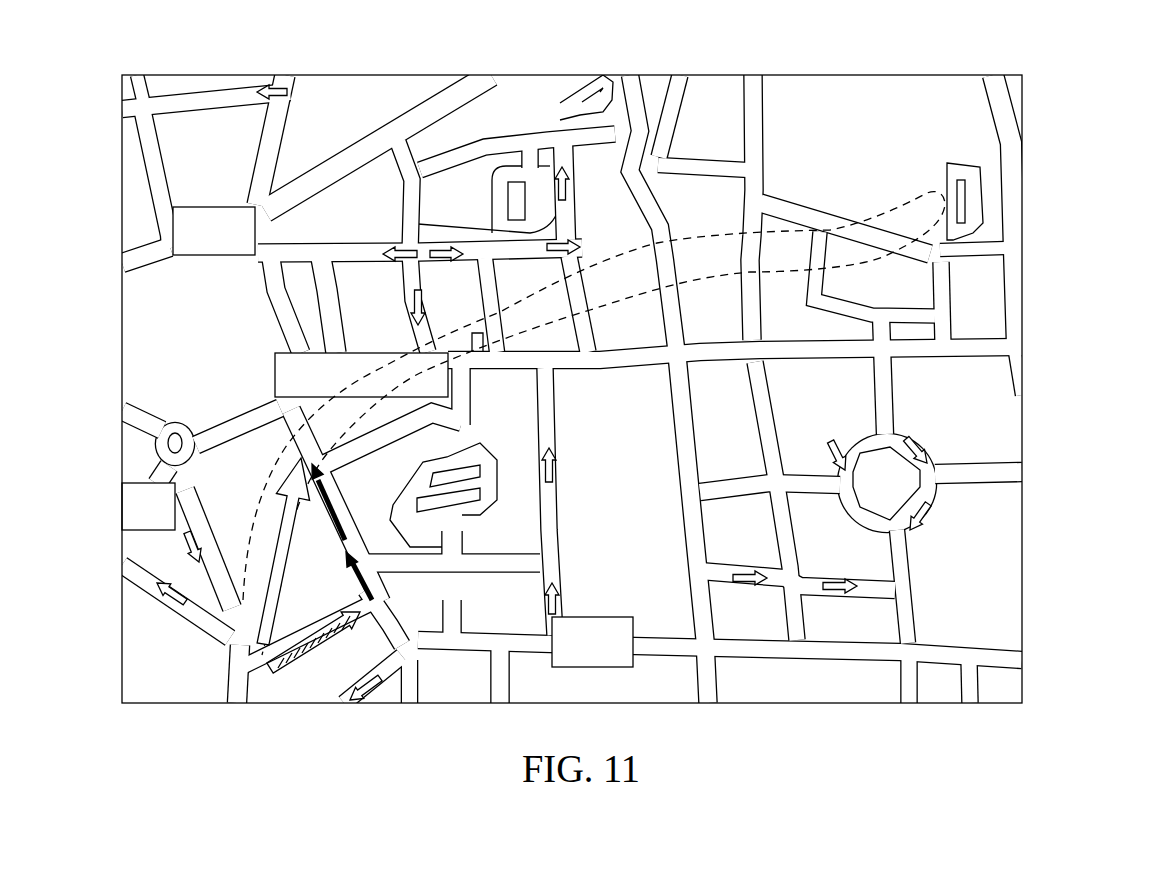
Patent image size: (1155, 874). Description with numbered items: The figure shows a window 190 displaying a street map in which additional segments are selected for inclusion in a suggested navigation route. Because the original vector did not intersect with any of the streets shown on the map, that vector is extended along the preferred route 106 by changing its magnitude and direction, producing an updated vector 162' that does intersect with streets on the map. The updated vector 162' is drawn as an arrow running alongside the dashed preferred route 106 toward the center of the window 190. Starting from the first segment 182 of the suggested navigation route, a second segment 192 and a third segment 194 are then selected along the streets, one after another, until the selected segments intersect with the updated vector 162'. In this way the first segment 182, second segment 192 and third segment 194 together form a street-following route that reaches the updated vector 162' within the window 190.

The window 190 is at (1058, 96).
The preferred route 106 is at (275, 468).
The updated vector 162' is at (186, 552).
The first segment 182 is at (338, 637).
The second segment 192 is at (373, 593).
The third segment 194 is at (340, 530).